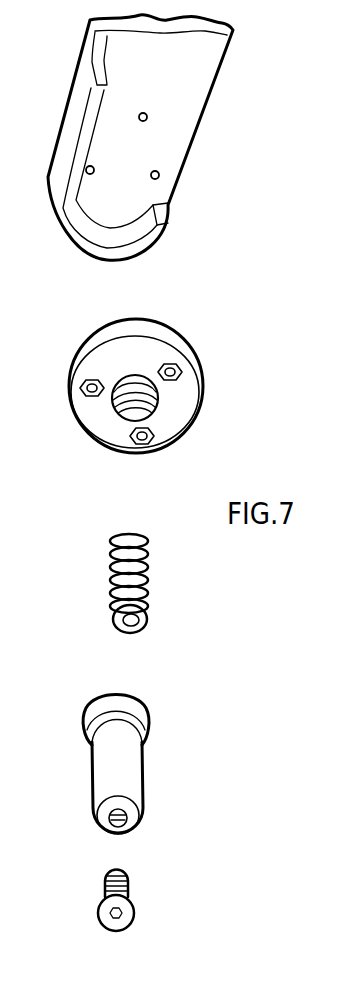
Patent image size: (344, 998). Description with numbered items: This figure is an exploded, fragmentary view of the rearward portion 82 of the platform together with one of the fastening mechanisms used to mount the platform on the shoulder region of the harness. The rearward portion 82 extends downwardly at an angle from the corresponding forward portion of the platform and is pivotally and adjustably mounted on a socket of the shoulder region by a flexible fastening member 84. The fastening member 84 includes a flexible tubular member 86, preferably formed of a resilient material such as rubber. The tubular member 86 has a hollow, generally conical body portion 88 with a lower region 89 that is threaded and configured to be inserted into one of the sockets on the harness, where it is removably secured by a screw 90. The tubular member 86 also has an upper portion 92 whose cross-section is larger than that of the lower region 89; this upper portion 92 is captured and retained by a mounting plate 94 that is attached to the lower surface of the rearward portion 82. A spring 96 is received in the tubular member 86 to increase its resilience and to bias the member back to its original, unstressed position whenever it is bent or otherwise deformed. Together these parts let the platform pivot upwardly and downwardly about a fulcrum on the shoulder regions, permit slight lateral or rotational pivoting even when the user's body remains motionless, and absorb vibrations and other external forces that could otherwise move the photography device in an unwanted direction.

The rearward portion 82 is at (207, 100).
The mounting plate 94 is at (203, 358).
The spring 96 is at (141, 583).
The flexible fastening member 84 is at (100, 582).
The flexible tubular member 86 is at (172, 769).
The upper portion 92 is at (137, 699).
The body portion 88 is at (143, 750).
The lower region 89 is at (132, 836).
The screw 90 is at (133, 902).